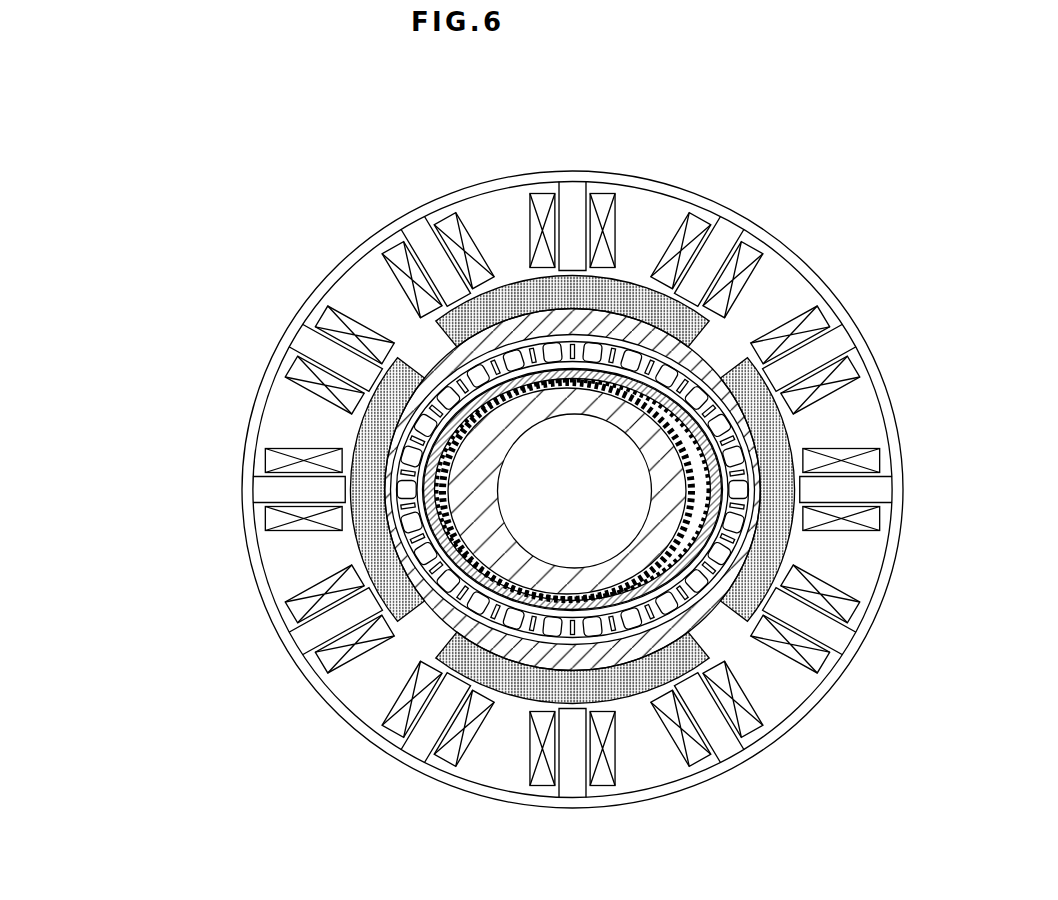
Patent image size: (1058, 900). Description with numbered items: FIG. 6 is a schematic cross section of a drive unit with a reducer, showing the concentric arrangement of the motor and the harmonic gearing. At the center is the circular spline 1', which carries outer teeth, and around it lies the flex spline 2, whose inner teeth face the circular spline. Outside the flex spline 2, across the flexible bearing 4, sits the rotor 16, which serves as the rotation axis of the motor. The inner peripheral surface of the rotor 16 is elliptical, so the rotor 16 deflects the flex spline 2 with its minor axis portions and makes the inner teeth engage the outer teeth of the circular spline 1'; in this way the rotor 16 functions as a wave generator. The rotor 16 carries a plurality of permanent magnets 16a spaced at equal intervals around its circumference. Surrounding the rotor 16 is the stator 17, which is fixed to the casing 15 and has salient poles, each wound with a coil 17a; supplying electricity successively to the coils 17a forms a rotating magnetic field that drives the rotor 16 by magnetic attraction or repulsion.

The circular spline 1' is at (376, 499).
The flex spline 2 is at (428, 483).
The flexible bearing 4 is at (432, 407).
The casing 15 is at (407, 222).
The rotor 16 is at (517, 422).
The permanent magnets 16a is at (517, 297).
The stator 17 is at (572, 463).
The coil 17a is at (733, 278).